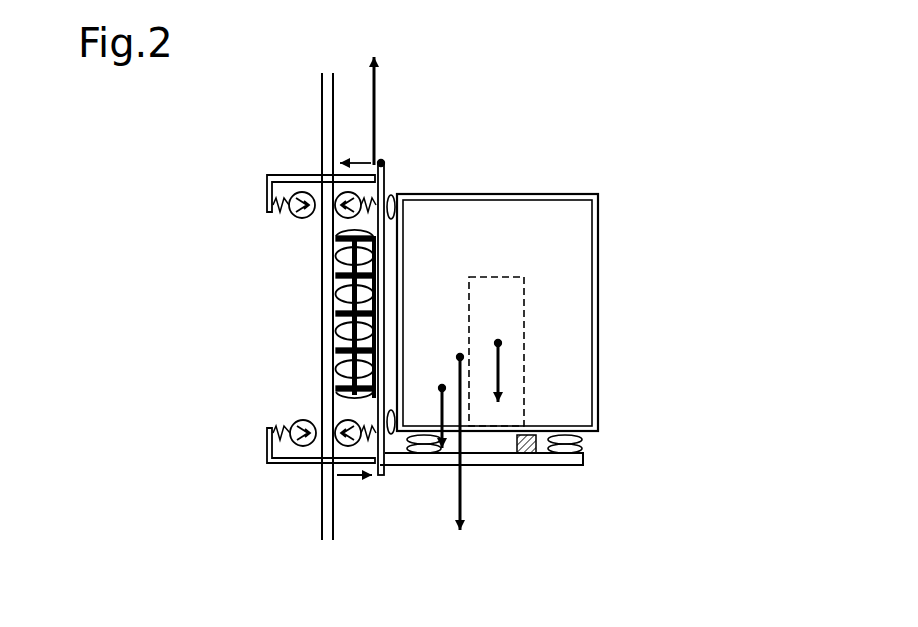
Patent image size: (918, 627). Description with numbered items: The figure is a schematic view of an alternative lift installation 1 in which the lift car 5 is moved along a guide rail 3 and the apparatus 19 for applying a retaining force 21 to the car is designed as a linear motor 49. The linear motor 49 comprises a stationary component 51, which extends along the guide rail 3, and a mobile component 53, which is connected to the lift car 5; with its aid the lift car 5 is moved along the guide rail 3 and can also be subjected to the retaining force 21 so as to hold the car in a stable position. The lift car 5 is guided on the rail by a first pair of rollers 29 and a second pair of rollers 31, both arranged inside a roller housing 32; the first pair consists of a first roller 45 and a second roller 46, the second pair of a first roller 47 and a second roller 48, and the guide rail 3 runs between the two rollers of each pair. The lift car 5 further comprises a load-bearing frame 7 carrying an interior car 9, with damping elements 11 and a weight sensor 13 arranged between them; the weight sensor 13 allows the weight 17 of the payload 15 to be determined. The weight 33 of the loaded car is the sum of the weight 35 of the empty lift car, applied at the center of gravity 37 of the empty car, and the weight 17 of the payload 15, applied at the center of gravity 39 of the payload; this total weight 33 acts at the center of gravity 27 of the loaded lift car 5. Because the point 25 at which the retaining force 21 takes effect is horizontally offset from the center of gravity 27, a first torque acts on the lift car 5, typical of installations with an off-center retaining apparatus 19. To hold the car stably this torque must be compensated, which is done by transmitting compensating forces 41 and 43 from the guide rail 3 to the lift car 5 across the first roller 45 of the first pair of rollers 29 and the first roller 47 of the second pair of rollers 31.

The lift installation 1 is at (645, 65).
The guide rail 3 is at (318, 130).
The lift car 5 is at (512, 135).
The load-bearing frame 7 is at (412, 467).
The interior car 9 is at (567, 192).
The damping elements 11 is at (393, 197).
The weight sensor 13 is at (537, 453).
The payload 15 is at (503, 320).
The weight of the payload 17 is at (505, 371).
The apparatus for applying a retaining force 19 is at (393, 255).
The retaining force 21 is at (370, 93).
The point at which the retaining force takes effect 25 is at (383, 160).
The center of gravity of the loaded lift car 27 is at (459, 354).
The first pair of rollers 29 is at (307, 452).
The second pair of rollers 31 is at (305, 229).
The roller housing 32 is at (292, 175).
The weight of the loaded lift car 33 is at (463, 479).
The weight of the empty lift car 35 is at (445, 418).
The center of gravity of the empty lift car 37 is at (441, 385).
The center of gravity of the payload 39 is at (497, 340).
The compensating force 41 is at (355, 477).
The compensating force 43 is at (350, 160).
The first roller of the first pair of rollers 45 is at (340, 425).
The second roller of the first pair of rollers 46 is at (297, 424).
The first roller of the second pair of rollers 47 is at (296, 212).
The second roller of the second pair of rollers 48 is at (345, 216).
The linear motor 49 is at (308, 327).
The stationary component 51 is at (398, 207).
The mobile component 53 is at (352, 370).